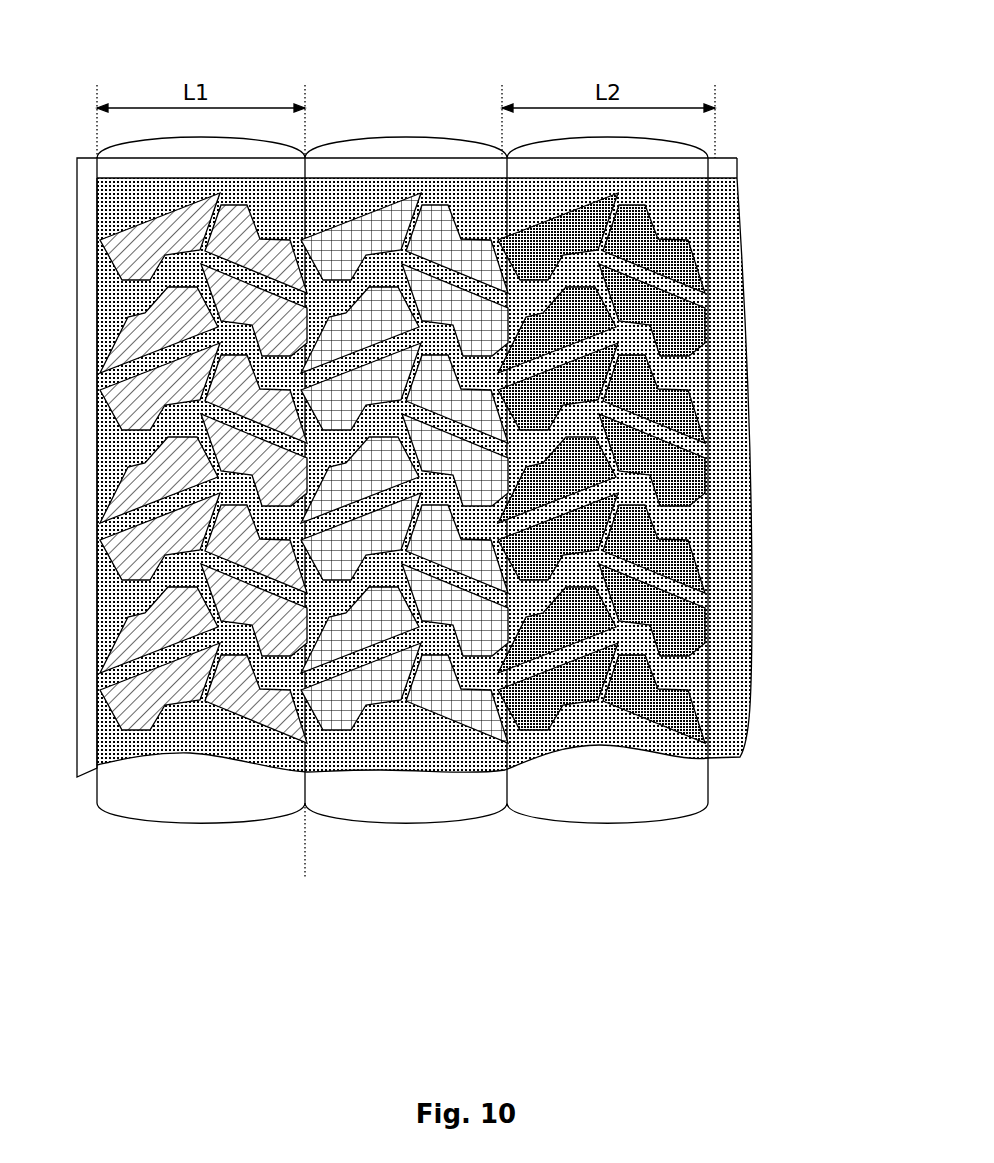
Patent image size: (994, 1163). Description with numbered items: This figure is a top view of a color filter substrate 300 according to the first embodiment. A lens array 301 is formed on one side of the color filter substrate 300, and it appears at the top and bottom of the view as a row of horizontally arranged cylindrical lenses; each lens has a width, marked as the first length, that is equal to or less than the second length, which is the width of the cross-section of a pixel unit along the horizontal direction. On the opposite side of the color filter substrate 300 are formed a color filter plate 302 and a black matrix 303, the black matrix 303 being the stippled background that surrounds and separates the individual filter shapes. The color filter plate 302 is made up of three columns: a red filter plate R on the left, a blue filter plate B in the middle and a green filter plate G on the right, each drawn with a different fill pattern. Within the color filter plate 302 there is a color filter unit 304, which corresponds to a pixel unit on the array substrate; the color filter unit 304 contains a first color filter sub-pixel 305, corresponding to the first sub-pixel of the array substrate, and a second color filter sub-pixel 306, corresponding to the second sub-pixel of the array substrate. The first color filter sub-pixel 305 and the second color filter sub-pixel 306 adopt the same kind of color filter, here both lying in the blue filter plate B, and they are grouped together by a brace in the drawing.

The color filter substrate 300 is at (722, 170).
The lens array 301 is at (462, 132).
The color filter plate 302 is at (402, 476).
The black matrix 303 is at (722, 223).
The color filter unit 304 is at (404, 149).
The first color filter sub-pixel 305 is at (360, 232).
The second color filter sub-pixel 306 is at (428, 232).
The red filter plate R is at (137, 718).
The blue filter plate B is at (404, 445).
The green filter plate G is at (601, 539).